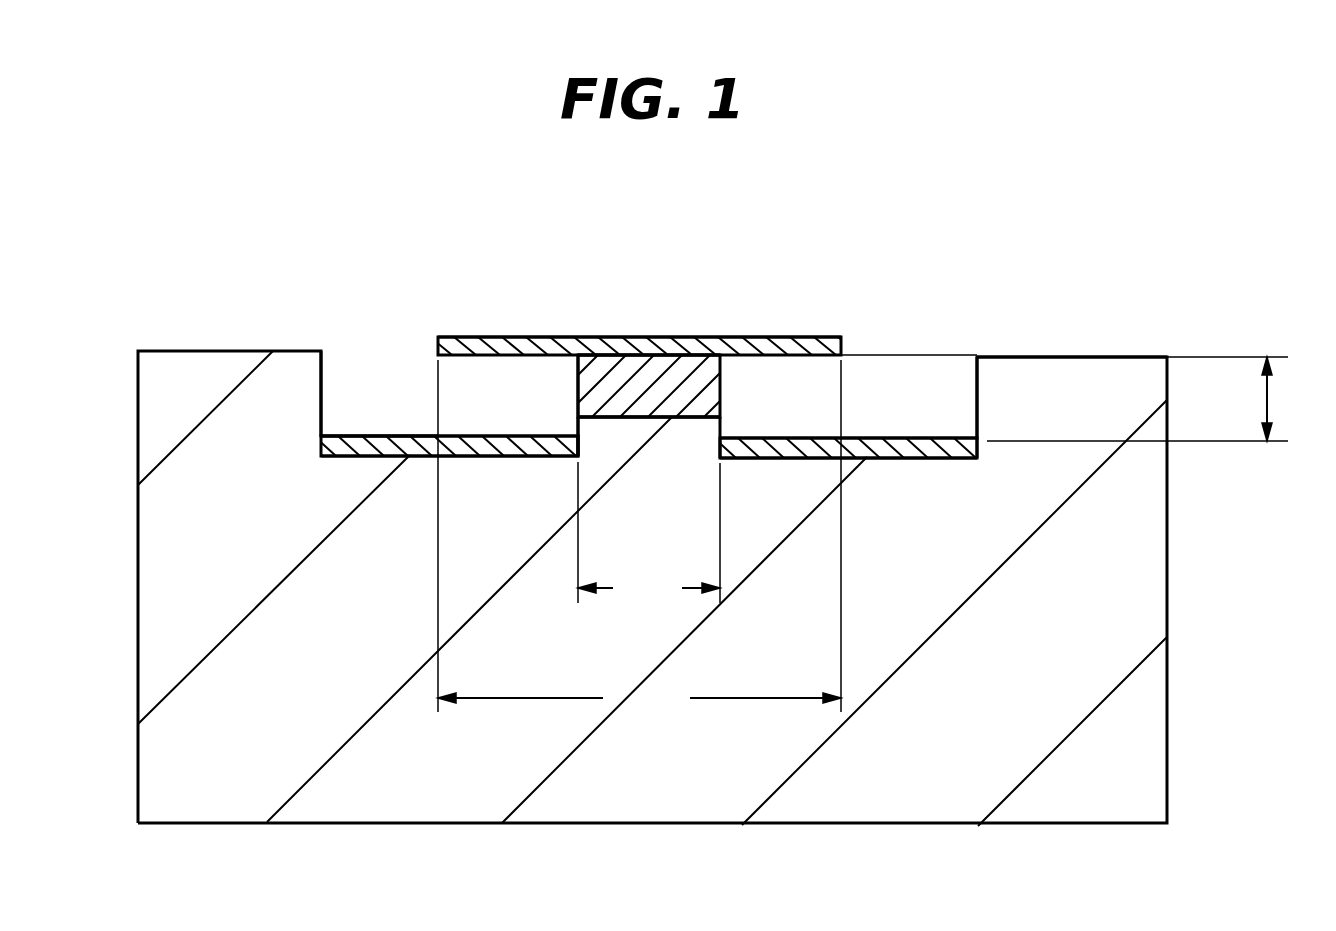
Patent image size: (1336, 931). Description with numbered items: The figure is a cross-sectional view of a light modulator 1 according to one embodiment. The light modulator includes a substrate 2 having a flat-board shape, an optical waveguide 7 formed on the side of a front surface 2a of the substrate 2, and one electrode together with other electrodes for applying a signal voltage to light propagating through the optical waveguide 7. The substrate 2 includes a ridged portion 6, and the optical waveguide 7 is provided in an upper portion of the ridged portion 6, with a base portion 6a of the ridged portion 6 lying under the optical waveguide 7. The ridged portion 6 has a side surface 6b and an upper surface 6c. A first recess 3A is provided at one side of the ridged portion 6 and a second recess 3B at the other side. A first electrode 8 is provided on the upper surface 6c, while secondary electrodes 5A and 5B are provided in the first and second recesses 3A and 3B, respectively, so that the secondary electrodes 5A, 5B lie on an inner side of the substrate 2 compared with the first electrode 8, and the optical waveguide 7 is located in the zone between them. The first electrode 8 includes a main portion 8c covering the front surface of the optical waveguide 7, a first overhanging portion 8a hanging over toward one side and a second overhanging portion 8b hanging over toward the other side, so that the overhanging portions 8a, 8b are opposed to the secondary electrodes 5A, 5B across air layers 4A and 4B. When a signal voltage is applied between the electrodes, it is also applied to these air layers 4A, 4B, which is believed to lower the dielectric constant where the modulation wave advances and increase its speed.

The light modulator 1 is at (1122, 343).
The substrate 2 is at (1117, 573).
The front surface 2a is at (1062, 357).
The first recess 3A is at (331, 351).
The second recess 3B is at (977, 383).
The air layer 4A is at (378, 377).
The air layer 4B is at (898, 390).
The secondary electrode 5A is at (365, 456).
The secondary electrode 5B is at (913, 450).
The ridged portion 6 is at (734, 387).
The base portion 6a is at (667, 428).
The side surface 6b is at (577, 398).
The upper surface 6c is at (652, 352).
The optical waveguide 7 is at (590, 372).
The first electrode 8 is at (582, 338).
The first overhanging portion 8a is at (477, 343).
The second overhanging portion 8b is at (812, 345).
The main portion 8c is at (678, 340).